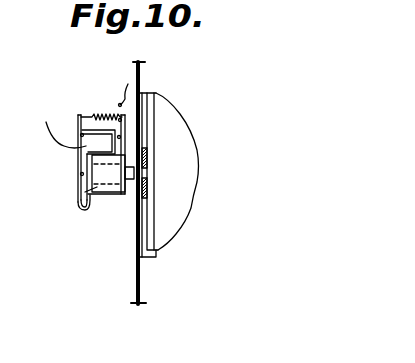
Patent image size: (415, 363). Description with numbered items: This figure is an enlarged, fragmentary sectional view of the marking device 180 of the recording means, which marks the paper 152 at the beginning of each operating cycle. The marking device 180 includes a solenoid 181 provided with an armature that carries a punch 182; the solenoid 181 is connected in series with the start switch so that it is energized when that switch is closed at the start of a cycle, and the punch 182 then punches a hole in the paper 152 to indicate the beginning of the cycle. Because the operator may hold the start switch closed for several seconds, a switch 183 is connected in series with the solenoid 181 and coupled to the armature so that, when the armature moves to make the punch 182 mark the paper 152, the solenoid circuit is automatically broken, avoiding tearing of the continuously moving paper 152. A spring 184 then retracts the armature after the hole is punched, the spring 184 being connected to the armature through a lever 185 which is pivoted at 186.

The marking device 180 is at (153, 82).
The spring 184 is at (106, 113).
The pivot 186 is at (86, 130).
The lever 185 is at (76, 153).
The switch 183 is at (69, 212).
The solenoid 181 is at (74, 203).
The punch 182 is at (131, 182).
The paper 152 is at (140, 296).